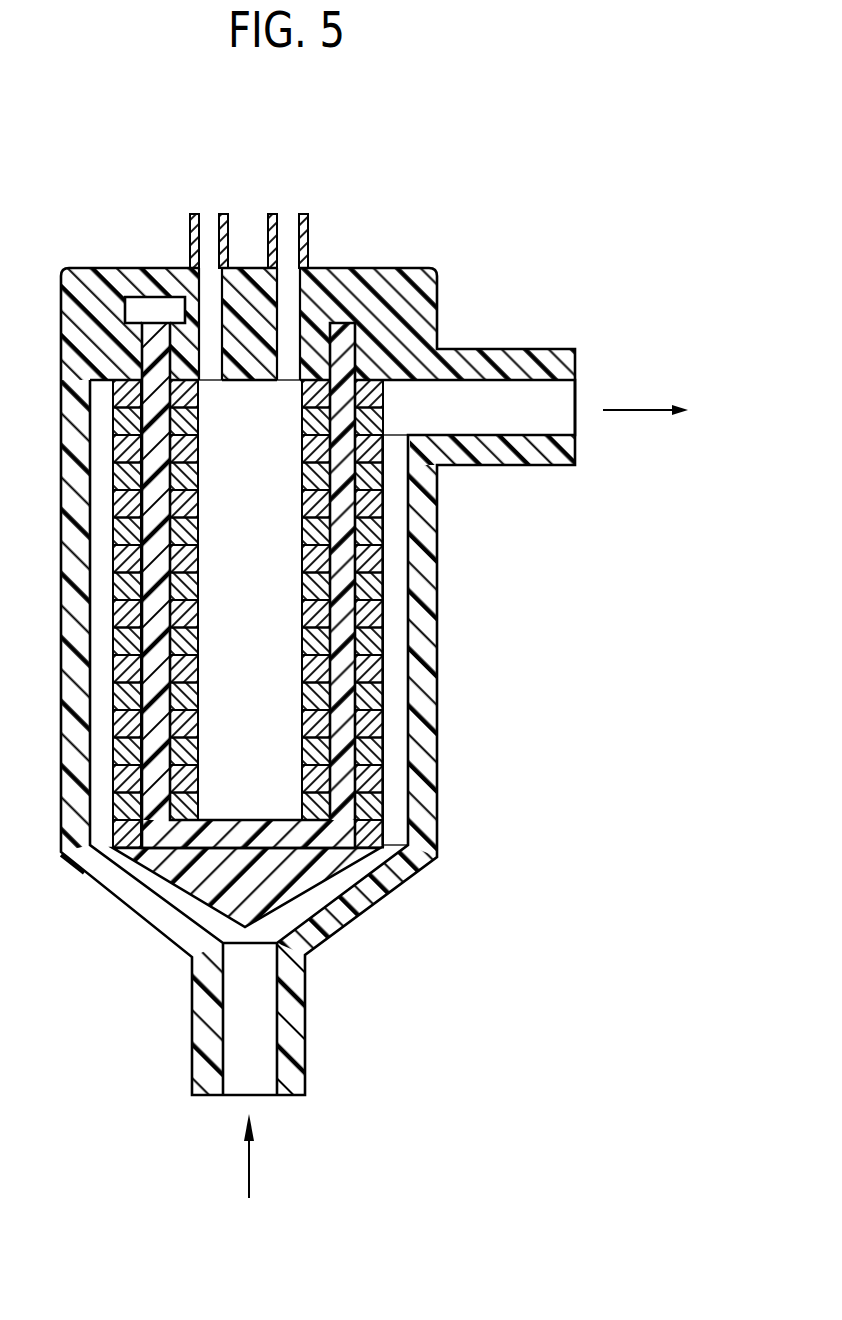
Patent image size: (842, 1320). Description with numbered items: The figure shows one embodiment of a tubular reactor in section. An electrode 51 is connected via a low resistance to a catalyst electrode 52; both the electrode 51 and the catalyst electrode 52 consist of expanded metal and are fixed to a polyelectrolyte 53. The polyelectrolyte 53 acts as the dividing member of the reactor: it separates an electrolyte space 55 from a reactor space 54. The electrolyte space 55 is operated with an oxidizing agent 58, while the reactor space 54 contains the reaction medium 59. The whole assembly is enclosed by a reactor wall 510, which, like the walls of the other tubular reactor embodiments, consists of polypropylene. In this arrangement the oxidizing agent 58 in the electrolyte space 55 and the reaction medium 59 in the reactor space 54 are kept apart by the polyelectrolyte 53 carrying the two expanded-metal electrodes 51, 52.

The electrode 51 is at (382, 680).
The catalyst electrode 52 is at (387, 507).
The polyelectrolyte 53 is at (372, 597).
The reactor space 54 is at (388, 810).
The electrolyte space 55 is at (270, 722).
The oxidizing agent 58 is at (208, 207).
The reaction medium 59 is at (256, 1176).
The reactor wall 510 is at (437, 287).